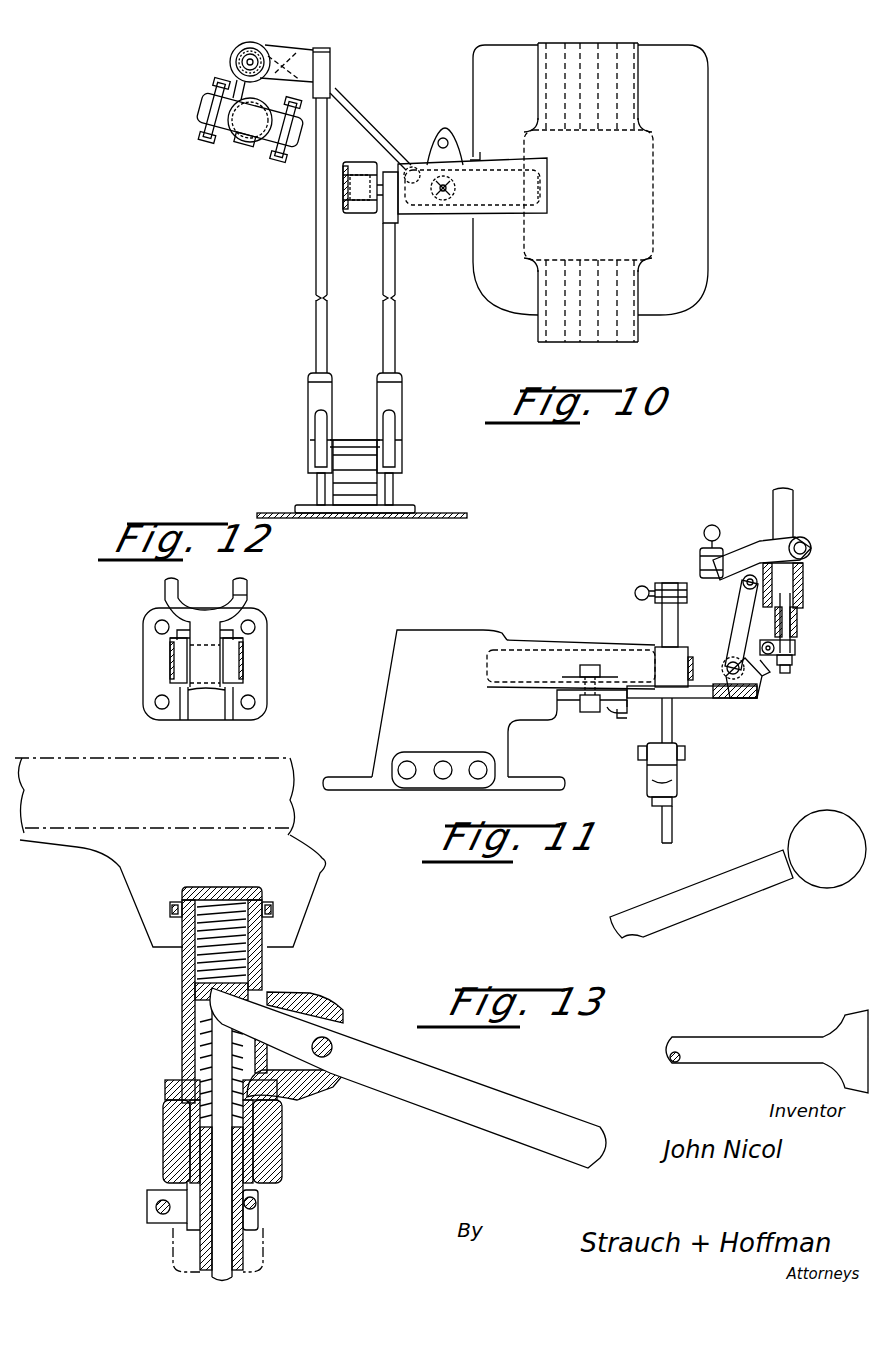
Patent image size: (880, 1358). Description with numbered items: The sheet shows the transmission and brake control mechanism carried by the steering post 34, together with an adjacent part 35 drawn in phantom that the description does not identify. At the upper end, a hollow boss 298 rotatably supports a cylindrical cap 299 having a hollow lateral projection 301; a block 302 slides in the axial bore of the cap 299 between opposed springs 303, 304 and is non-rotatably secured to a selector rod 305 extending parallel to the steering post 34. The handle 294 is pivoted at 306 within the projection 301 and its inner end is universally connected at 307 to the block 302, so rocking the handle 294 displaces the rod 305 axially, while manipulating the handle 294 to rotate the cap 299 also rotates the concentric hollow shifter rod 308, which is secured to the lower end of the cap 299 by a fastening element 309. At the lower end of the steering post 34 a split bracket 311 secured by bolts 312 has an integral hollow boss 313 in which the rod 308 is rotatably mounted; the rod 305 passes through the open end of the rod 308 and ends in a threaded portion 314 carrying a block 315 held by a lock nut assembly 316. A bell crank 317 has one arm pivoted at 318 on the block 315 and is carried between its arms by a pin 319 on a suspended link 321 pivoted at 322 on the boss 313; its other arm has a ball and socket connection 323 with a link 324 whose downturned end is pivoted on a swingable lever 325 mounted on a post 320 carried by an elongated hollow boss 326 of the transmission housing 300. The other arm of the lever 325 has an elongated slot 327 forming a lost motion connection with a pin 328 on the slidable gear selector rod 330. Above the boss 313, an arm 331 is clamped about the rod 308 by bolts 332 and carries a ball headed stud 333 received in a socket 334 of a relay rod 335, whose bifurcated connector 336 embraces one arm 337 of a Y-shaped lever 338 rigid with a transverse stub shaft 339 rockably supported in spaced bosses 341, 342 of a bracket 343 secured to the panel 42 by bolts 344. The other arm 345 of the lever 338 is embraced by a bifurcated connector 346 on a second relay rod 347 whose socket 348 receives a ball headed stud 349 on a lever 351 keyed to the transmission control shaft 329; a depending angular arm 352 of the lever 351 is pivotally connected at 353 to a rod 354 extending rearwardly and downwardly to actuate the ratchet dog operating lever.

In FIG. 10, the steering post 34 is at (240, 140).
In FIG. 13, the steering post 34 is at (266, 1250).
In FIG. 13, the frame 35 is at (295, 828).
In FIG. 10, the panel 42 is at (425, 519).
In FIG. 13, the handle 294 is at (485, 1114).
In FIG. 13, the hollow boss 298 is at (157, 1155).
In FIG. 13, the cylindrical cap 299 is at (182, 1042).
In FIG. 10, the transmission housing 300 is at (683, 176).
In FIG. 11, the transmission housing 300 is at (470, 634).
In FIG. 13, the hollow lateral projection 301 is at (326, 996).
In FIG. 13, the block 302 is at (197, 1000).
In FIG. 13, the spring 303 is at (185, 983).
In FIG. 13, the spring 304 is at (244, 1062).
In FIG. 10, the selector rod 305 is at (242, 61).
In FIG. 11, the selector rod 305 is at (790, 617).
In FIG. 13, the selector rod 305 is at (216, 1083).
In FIG. 13, the pivot 306 is at (332, 1044).
In FIG. 13, the universal connection 307 is at (266, 992).
In FIG. 10, the hollow shifter rod 308 is at (234, 90).
In FIG. 11, the hollow shifter rod 308 is at (793, 524).
In FIG. 13, the hollow shifter rod 308 is at (185, 1255).
In FIG. 13, the fastening element 309 is at (258, 1205).
In FIG. 10, the split bracket 311 is at (265, 142).
In FIG. 10, the bolts 312 is at (205, 135).
In FIG. 10, the hollow boss 313 is at (248, 44).
In FIG. 11, the hollow boss 313 is at (803, 590).
In FIG. 11, the threaded portion 314 is at (792, 672).
In FIG. 11, the block 315 is at (796, 649).
In FIG. 11, the lock nut assembly 316 is at (792, 661).
In FIG. 11, the bell crank 317 is at (768, 683).
In FIG. 11, the pivot 318 is at (766, 645).
In FIG. 11, the pin 319 is at (728, 662).
In FIG. 10, the post 320 is at (446, 138).
In FIG. 11, the post 320 is at (578, 670).
In FIG. 11, the suspended link 321 is at (740, 624).
In FIG. 11, the pivot 322 is at (744, 587).
In FIG. 11, the ball and socket connection 323 is at (752, 700).
In FIG. 10, the link 324 is at (362, 120).
In FIG. 11, the link 324 is at (700, 699).
In FIG. 10, the swingable lever 325 is at (476, 160).
In FIG. 11, the swingable lever 325 is at (625, 714).
In FIG. 10, the elongated hollow boss 326 is at (470, 219).
In FIG. 11, the elongated hollow boss 326 is at (578, 642).
In FIG. 10, the elongated slot 327 is at (398, 206).
In FIG. 10, the pin 328 is at (458, 192).
In FIG. 10, the transmission control shaft 329 is at (346, 170).
In FIG. 11, the transmission control shaft 329 is at (655, 660).
In FIG. 10, the gear selector rod 330 is at (538, 180).
In FIG. 11, the gear selector rod 330 is at (560, 712).
In FIG. 10, the arm 331 is at (295, 52).
In FIG. 11, the arm 331 is at (742, 546).
In FIG. 11, the bolts 332 is at (812, 549).
In FIG. 11, the ball headed stud 333 is at (700, 557).
In FIG. 10, the socket 334 is at (331, 62).
In FIG. 11, the socket 334 is at (712, 525).
In FIG. 10, the relay rod 335 is at (316, 282).
In FIG. 10, the bifurcated connector 336 is at (308, 438).
In FIG. 10, the arm 337 is at (312, 464).
In FIG. 12, the arm 337 is at (243, 593).
In FIG. 10, the Y-shaped lever 338 is at (352, 441).
In FIG. 12, the Y-shaped lever 338 is at (208, 698).
In FIG. 12, the transverse stub shaft 339 is at (246, 666).
In FIG. 10, the boss 341 is at (318, 487).
In FIG. 12, the boss 341 is at (235, 626).
In FIG. 10, the boss 342 is at (392, 484).
In FIG. 12, the boss 342 is at (152, 637).
In FIG. 10, the bracket 343 is at (400, 507).
In FIG. 12, the bracket 343 is at (265, 692).
In FIG. 12, the bolts 344 is at (256, 629).
In FIG. 10, the arm 345 is at (392, 464).
In FIG. 12, the arm 345 is at (185, 613).
In FIG. 10, the bifurcated connector 346 is at (402, 408).
In FIG. 10, the second relay rod 347 is at (396, 360).
In FIG. 10, the socket 348 is at (408, 168).
In FIG. 11, the socket 348 is at (635, 594).
In FIG. 10, the ball headed stud 349 is at (355, 212).
In FIG. 11, the ball headed stud 349 is at (660, 584).
In FIG. 11, the lever 351 is at (679, 628).
In FIG. 11, the angular arm 352 is at (650, 707).
In FIG. 11, the pivotal connection 353 is at (680, 753).
In FIG. 11, the rod 354 is at (670, 824).